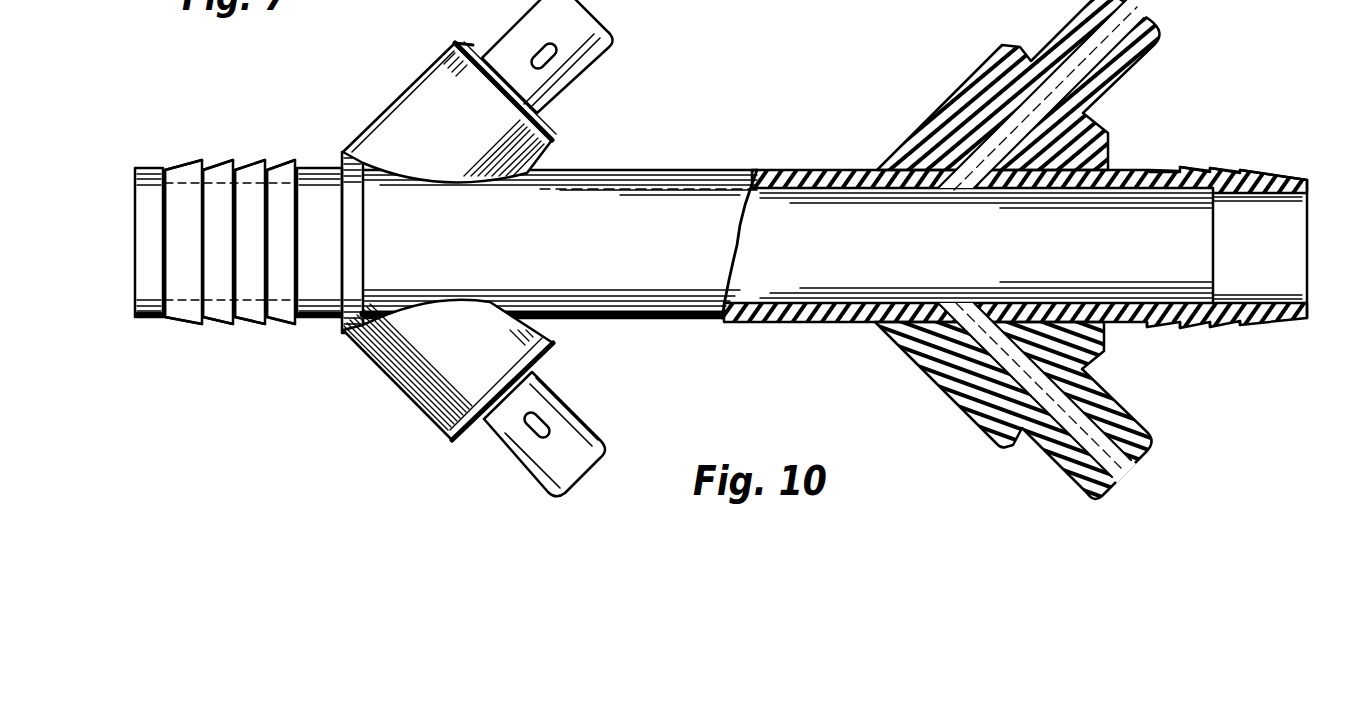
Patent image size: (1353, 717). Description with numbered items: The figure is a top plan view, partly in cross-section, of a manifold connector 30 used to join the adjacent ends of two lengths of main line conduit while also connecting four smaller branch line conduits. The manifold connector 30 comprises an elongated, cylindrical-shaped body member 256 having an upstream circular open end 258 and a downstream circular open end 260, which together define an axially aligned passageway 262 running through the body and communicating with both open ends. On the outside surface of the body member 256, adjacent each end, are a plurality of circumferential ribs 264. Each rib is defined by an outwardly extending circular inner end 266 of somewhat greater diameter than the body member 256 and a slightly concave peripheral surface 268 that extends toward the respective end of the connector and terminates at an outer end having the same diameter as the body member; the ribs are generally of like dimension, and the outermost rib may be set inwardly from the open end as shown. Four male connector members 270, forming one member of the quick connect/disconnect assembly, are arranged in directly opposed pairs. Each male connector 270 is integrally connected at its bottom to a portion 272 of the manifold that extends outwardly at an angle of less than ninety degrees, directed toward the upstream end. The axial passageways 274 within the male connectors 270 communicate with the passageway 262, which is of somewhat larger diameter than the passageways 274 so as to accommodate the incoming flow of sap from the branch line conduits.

The manifold connector 30 is at (769, 131).
The body member 256 is at (607, 169).
The upstream open end 258 is at (1307, 173).
The downstream open end 260 is at (136, 167).
The axial passageway 262 is at (607, 320).
The circumferential ribs 264 is at (218, 156).
The inner end of rib 266 is at (265, 325).
The peripheral surface of rib 268 is at (286, 325).
The male connector member 270 is at (524, 27).
The manifold portion 272 is at (940, 391).
The axial passageway of male connector 274 is at (1158, 42).